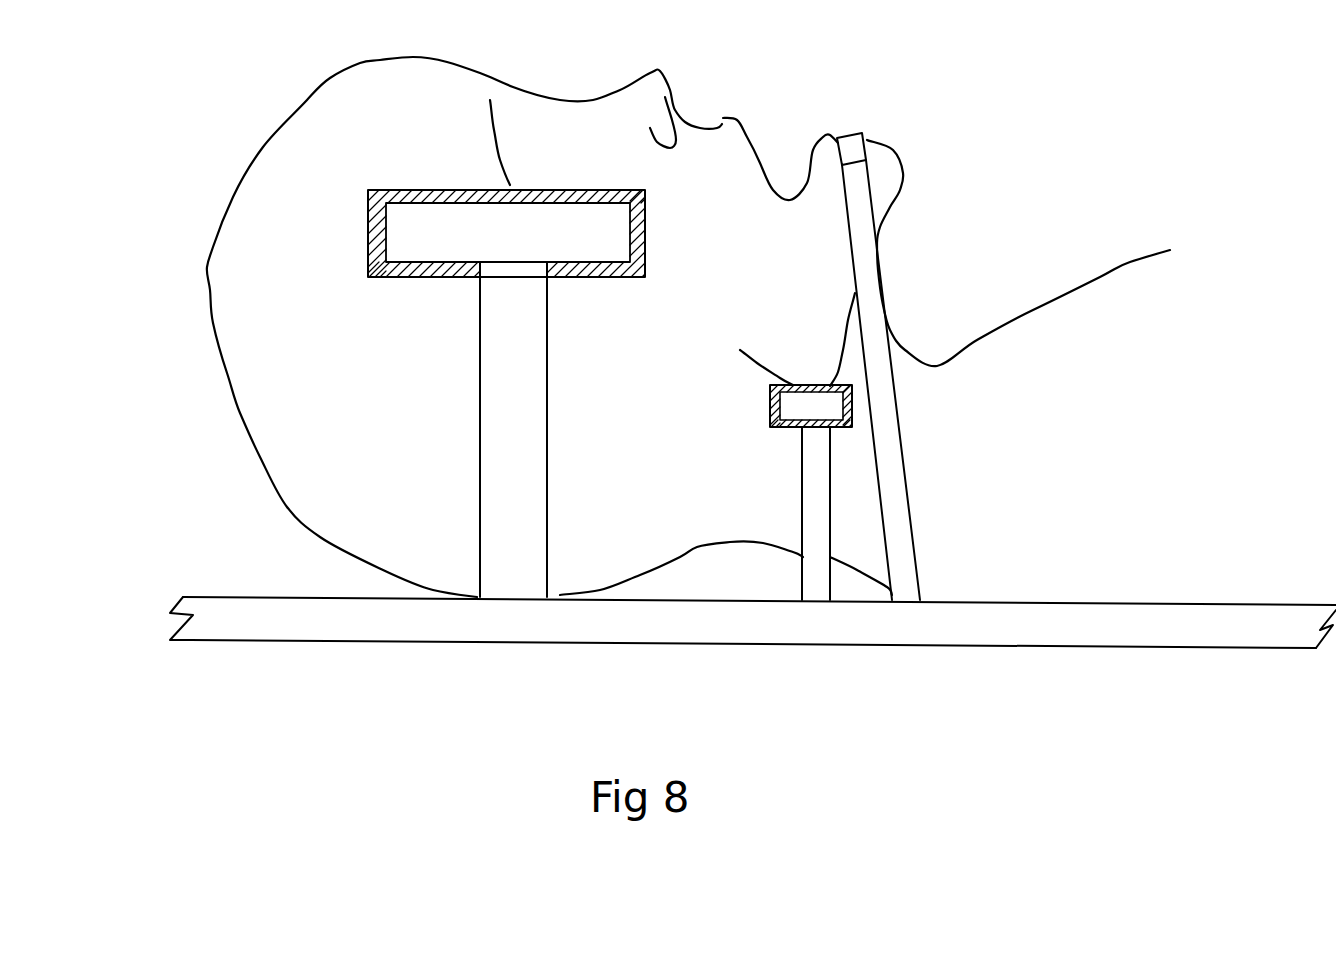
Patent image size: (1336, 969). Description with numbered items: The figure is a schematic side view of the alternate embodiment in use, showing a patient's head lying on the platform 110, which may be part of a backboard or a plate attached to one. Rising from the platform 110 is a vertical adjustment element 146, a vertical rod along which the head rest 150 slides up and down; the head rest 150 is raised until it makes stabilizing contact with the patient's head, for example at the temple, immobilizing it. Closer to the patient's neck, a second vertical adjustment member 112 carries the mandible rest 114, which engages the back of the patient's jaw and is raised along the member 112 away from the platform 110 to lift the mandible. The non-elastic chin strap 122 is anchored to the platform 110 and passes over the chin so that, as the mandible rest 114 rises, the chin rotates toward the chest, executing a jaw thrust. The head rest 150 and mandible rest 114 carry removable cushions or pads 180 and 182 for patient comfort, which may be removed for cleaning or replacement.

The platform 110 is at (289, 635).
The vertical adjustment member 112 is at (815, 490).
The mandible rest 114 is at (815, 405).
The chin strap 122 is at (868, 277).
The vertical adjustment element 146 is at (503, 400).
The head rest block 150 is at (417, 227).
The removable cushion or pad 180 is at (400, 267).
The removable cushion or pad 182 is at (840, 428).